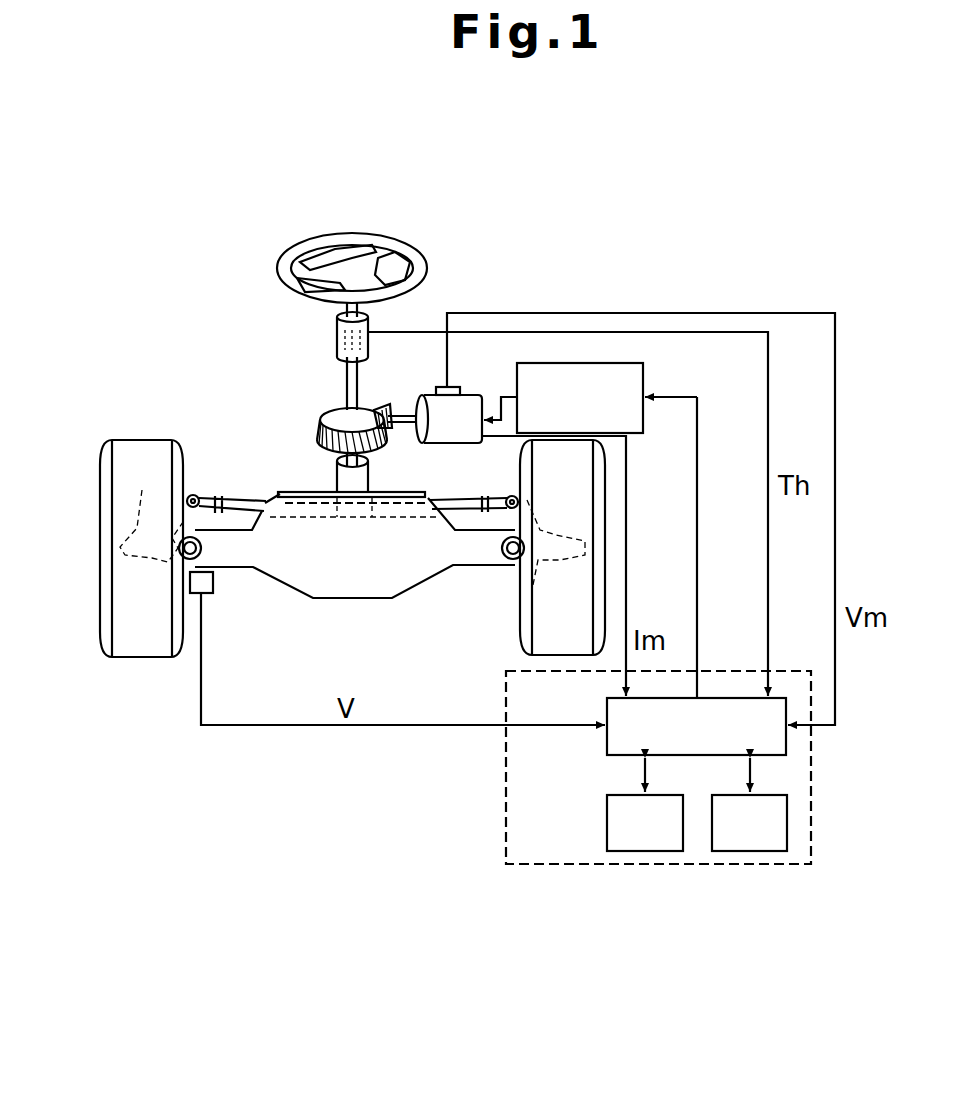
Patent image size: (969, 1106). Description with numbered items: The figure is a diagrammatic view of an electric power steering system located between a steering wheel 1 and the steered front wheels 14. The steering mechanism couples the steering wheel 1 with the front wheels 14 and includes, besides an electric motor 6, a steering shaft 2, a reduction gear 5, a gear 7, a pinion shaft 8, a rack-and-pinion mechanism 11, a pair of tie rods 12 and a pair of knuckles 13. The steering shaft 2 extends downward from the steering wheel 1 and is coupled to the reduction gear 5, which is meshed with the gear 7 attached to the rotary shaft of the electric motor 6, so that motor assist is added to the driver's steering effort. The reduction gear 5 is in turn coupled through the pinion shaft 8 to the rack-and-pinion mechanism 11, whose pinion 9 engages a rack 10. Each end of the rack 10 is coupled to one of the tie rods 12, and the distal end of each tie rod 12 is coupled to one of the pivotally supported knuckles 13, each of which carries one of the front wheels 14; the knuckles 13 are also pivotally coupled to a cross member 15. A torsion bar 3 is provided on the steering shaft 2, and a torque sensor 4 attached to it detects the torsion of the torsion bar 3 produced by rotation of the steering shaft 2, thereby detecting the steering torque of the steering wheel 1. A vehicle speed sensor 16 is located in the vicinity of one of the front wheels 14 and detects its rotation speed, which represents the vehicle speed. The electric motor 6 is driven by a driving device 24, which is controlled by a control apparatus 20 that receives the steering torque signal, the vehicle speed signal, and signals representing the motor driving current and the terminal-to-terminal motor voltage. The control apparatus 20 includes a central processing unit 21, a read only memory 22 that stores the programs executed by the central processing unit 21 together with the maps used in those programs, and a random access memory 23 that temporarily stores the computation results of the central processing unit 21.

The steering wheel 1 is at (410, 258).
The steering shaft 2 is at (368, 325).
The torsion bar 3 is at (335, 337).
The torque sensor 4 is at (340, 345).
The reduction gear 5 is at (328, 420).
The electric motor 6 is at (470, 445).
The gear 7 is at (385, 406).
The pinion shaft 8 is at (372, 482).
The pinion 9 is at (380, 508).
The rack 10 is at (300, 518).
The rack-and-pinion mechanism 11 is at (253, 496).
The tie rod 12 is at (204, 495).
The knuckle 13 is at (352, 524).
The front wheel 14 is at (100, 505).
The cross member 15 is at (286, 588).
The vehicle speed sensor 16 is at (213, 583).
The control apparatus 20 is at (659, 759).
The central processing unit (CPU) 21 is at (607, 698).
The read only memory (ROM) 22 is at (757, 851).
The random access memory (RAM) 23 is at (650, 851).
The driving device 24 is at (645, 372).